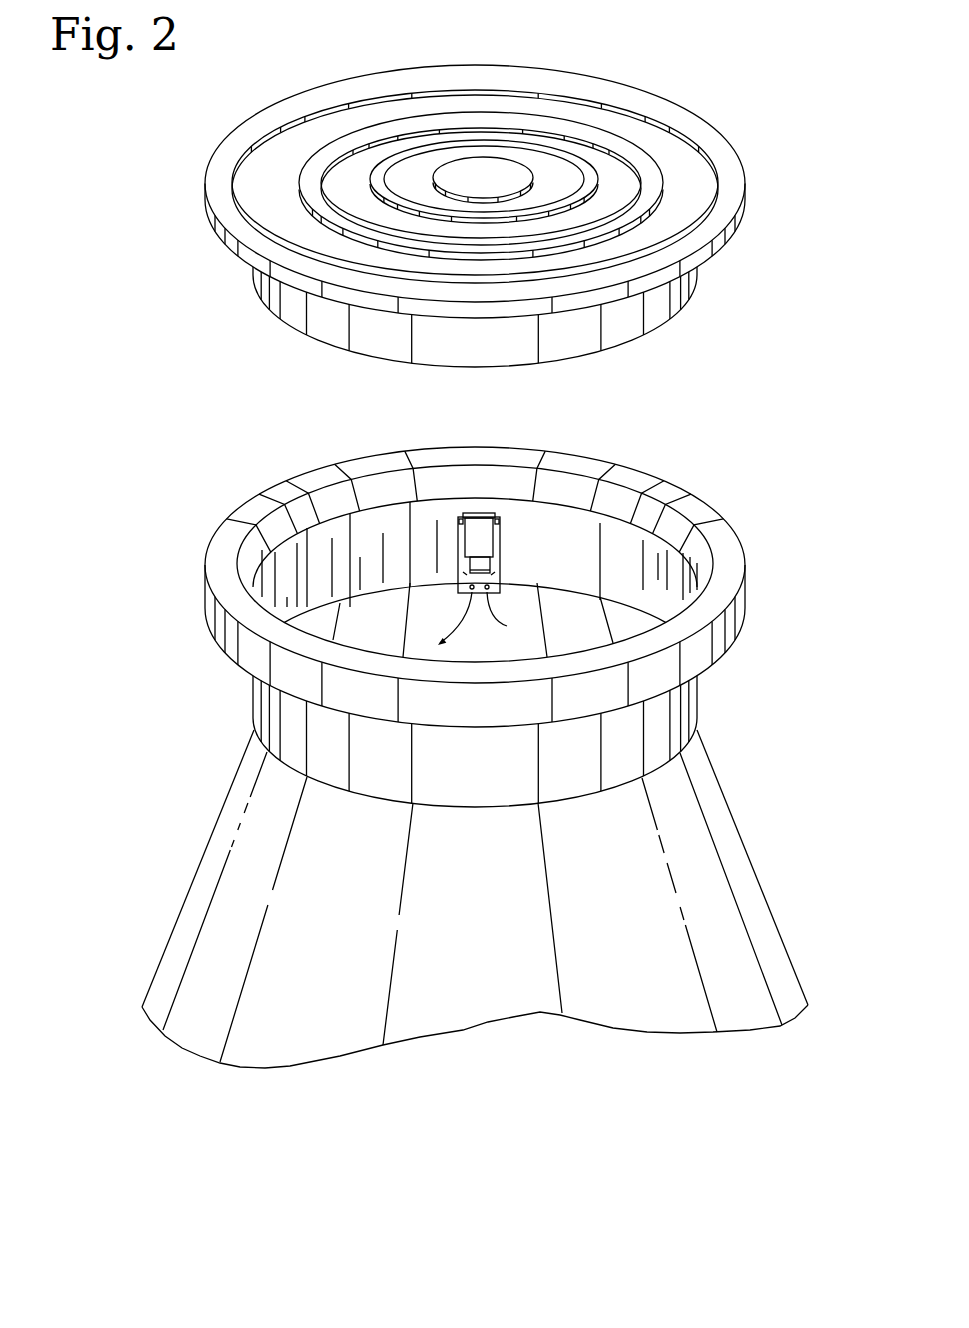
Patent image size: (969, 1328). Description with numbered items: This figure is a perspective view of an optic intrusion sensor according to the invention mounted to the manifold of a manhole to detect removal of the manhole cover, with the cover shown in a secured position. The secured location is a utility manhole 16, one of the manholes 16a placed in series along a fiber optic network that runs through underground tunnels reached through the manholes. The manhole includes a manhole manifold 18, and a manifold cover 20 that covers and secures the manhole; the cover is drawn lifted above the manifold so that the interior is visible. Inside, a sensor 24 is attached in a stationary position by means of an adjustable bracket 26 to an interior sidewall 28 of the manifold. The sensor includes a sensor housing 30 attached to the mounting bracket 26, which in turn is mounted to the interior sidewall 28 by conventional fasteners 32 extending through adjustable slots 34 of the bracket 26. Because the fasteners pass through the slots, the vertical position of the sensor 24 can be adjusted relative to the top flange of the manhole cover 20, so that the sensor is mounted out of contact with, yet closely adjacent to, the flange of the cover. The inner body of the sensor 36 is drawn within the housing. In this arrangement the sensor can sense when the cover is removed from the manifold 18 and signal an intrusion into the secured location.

The utility manhole 16 is at (749, 556).
The manhole 16a is at (710, 603).
The manhole manifold 18 is at (703, 689).
The manifold cover 20 is at (722, 150).
The sensor 24 is at (519, 521).
The adjustable bracket 26 is at (498, 580).
The interior sidewall 28 is at (641, 578).
The sensor housing 30 is at (503, 543).
The fastener 32 is at (491, 618).
The adjustable slot 34 is at (498, 584).
The sensor body 36 is at (475, 540).